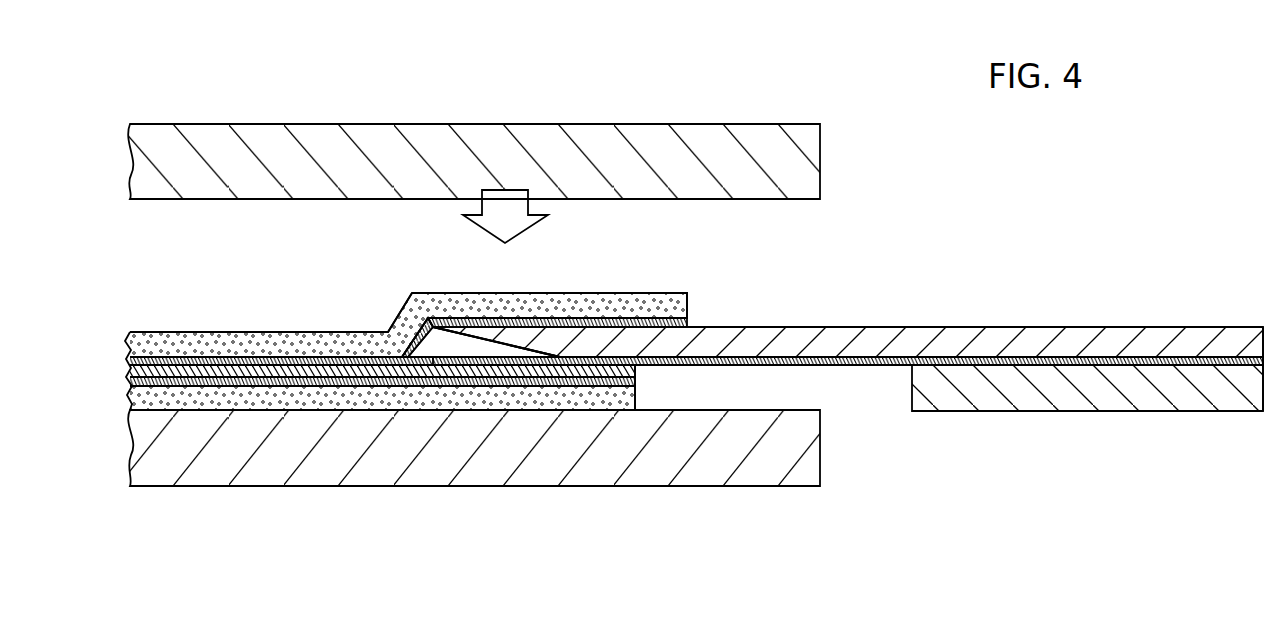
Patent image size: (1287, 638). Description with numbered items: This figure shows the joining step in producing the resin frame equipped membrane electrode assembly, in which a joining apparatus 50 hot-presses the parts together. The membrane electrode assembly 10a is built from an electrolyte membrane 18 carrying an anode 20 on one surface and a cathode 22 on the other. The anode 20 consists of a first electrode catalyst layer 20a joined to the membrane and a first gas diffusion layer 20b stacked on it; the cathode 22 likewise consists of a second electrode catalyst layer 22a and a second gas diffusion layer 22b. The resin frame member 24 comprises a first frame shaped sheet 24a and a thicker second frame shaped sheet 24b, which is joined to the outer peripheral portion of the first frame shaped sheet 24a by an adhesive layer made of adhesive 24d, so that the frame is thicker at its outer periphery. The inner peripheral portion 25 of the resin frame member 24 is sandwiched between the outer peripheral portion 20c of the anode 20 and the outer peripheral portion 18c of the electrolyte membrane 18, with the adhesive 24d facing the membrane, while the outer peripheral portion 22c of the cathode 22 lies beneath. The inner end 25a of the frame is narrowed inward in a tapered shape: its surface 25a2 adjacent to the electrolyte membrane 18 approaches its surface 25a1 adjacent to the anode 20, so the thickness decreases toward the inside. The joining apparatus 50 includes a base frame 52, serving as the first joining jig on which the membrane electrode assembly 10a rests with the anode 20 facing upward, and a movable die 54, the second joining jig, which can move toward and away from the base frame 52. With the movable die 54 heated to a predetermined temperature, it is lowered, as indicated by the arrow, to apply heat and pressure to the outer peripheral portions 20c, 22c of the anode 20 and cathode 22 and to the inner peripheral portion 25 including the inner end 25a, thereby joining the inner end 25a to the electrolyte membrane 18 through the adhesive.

The movable die 54 is at (435, 137).
The joining apparatus 50 is at (769, 108).
The base frame 52 is at (665, 470).
The membrane electrode assembly 10a is at (355, 327).
The anode 20 is at (272, 283).
The first electrode catalyst layer 20a is at (191, 356).
The first gas diffusion layer 20b is at (256, 340).
The outer peripheral portion of the anode 20c is at (618, 302).
The electrolyte membrane 18 is at (321, 372).
The outer peripheral portion of the electrolyte membrane 18c is at (580, 369).
The cathode 22 is at (270, 540).
The second electrode catalyst layer 22a is at (245, 382).
The second gas diffusion layer 22b is at (200, 398).
The outer peripheral portion of the cathode 22c is at (532, 403).
The resin frame member 24 is at (1128, 311).
The first frame shaped sheet 24a is at (1037, 342).
The second frame shaped sheet 24b is at (1032, 397).
The adhesive 24d is at (870, 366).
The inner peripheral portion of the resin frame member 25 is at (600, 342).
The inner end of the resin frame member 25a is at (497, 330).
The surface adjacent to the anode 25a1 is at (481, 326).
The surface adjacent to the electrolyte membrane 25a2 is at (487, 344).